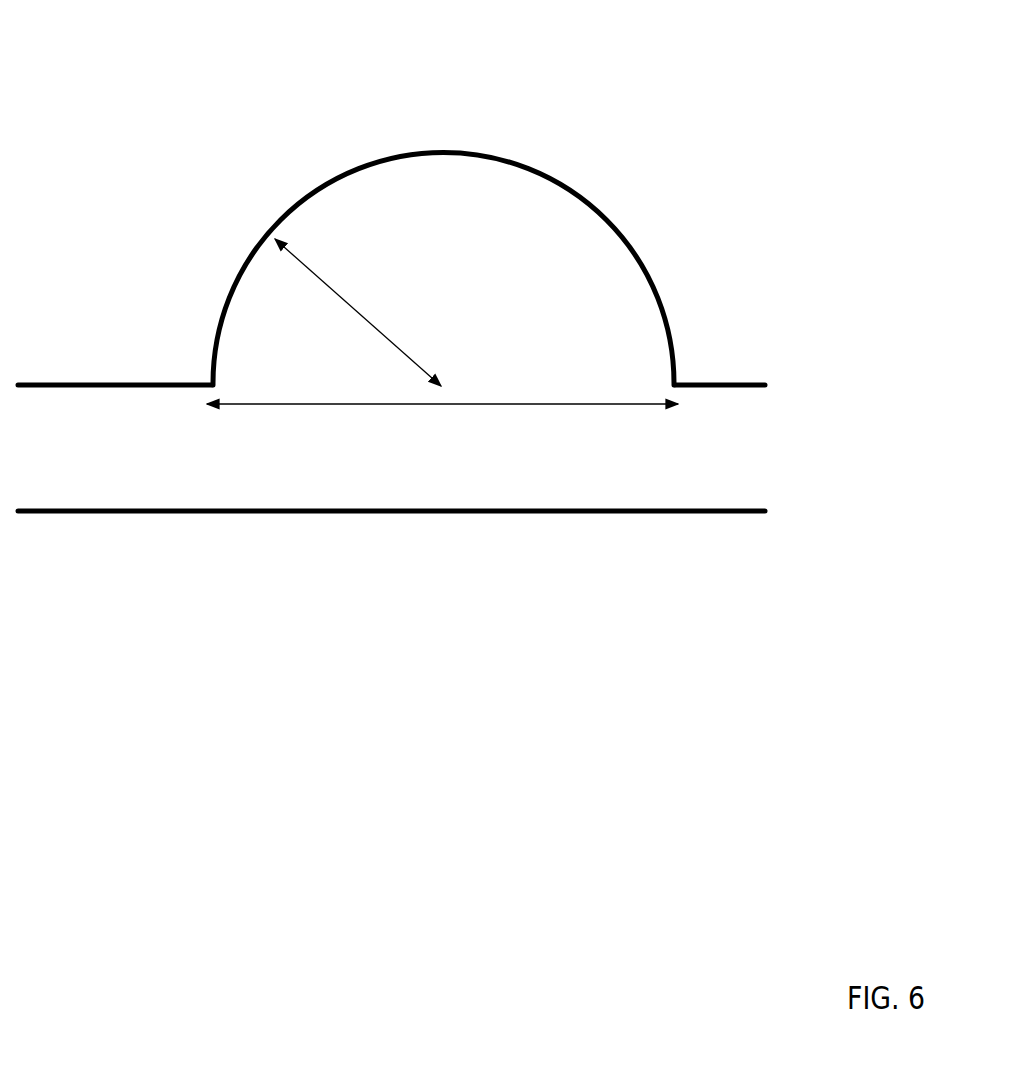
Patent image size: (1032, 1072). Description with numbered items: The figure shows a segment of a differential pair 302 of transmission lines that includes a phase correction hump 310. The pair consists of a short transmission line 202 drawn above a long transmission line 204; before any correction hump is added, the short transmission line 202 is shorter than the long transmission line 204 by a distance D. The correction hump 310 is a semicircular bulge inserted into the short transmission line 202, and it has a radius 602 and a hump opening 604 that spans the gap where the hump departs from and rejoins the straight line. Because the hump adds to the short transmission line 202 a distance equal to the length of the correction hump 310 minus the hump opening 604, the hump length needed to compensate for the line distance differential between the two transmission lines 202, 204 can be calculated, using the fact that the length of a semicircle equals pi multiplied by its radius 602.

The short transmission line 202 is at (120, 381).
The long transmission line 204 is at (122, 515).
The differential pair 302 is at (469, 460).
The correction hump 310 is at (562, 184).
The radius 602 is at (344, 295).
The hump opening 604 is at (370, 404).